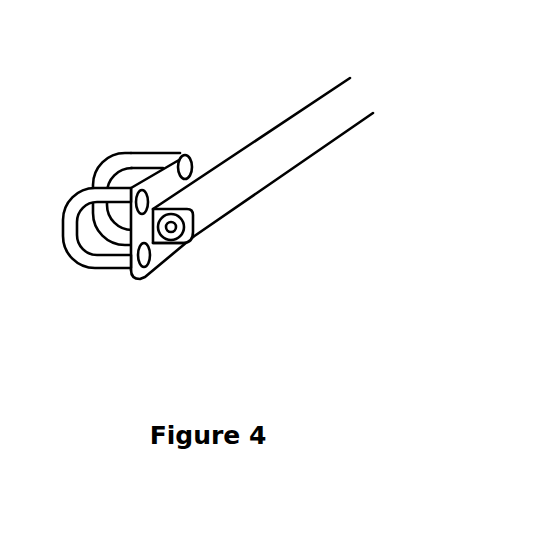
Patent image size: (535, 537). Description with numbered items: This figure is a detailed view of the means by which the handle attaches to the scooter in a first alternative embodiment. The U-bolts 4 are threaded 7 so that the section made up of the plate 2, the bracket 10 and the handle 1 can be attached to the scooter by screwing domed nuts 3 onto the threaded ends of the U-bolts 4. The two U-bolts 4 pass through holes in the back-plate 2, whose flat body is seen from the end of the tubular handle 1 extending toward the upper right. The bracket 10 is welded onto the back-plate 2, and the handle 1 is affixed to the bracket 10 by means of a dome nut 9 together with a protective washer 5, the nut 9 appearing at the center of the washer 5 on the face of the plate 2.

The handle 1 is at (340, 138).
The plate 2 is at (183, 153).
The domed nuts 3 is at (195, 152).
The U-bolts 4 is at (122, 152).
The protective washer 5 is at (187, 244).
The threads 7 is at (163, 155).
The dome nut 9 is at (176, 227).
The bracket 10 is at (176, 241).